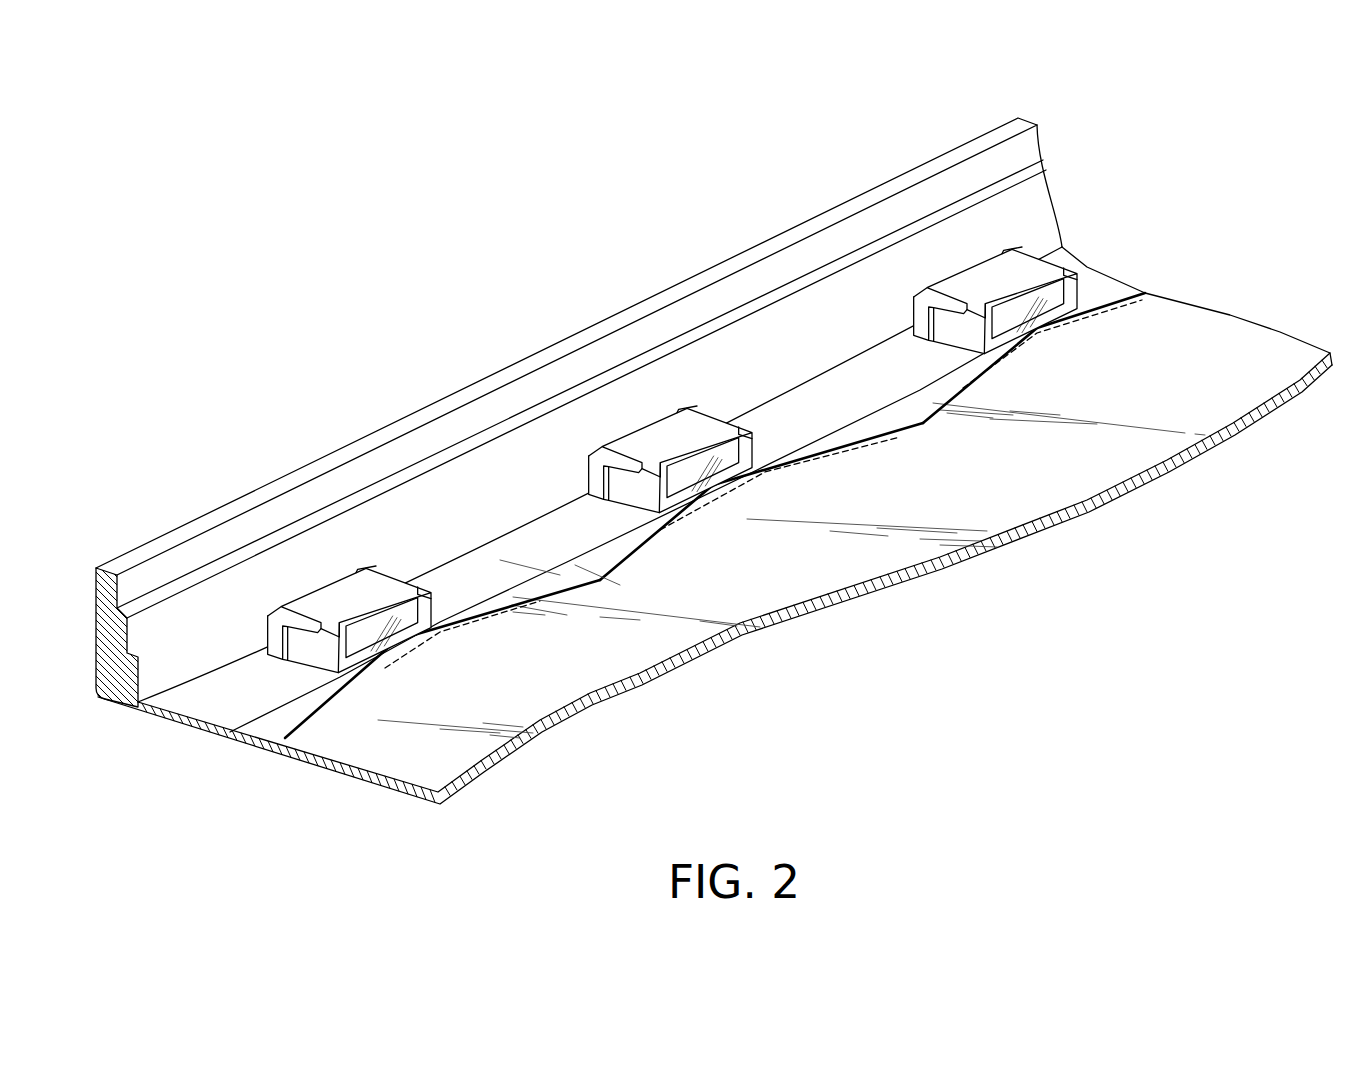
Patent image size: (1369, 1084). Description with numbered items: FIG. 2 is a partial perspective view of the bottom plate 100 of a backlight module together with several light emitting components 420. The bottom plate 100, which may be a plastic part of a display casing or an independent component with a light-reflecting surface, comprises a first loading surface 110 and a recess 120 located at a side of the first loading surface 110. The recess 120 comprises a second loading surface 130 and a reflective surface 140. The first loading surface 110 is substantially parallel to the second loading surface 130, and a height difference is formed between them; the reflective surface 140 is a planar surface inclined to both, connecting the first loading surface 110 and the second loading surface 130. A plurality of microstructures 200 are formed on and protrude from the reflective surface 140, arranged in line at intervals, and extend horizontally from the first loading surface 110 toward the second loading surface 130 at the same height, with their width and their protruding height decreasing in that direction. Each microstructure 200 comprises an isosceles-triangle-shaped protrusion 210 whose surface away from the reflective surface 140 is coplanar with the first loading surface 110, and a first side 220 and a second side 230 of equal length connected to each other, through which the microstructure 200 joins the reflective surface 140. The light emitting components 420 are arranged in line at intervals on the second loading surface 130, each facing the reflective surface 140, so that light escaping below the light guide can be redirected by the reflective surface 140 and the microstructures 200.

The bottom plate 100 is at (666, 461).
The first loading surface 110 is at (772, 568).
The recess 120 is at (223, 695).
The second loading surface 130 is at (518, 550).
The reflective surface 140 is at (587, 565).
The microstructure 200 is at (660, 563).
The protrusion 210 is at (400, 665).
The first side 220 is at (318, 694).
The second side 230 is at (467, 612).
The light emitting component 420 is at (673, 443).